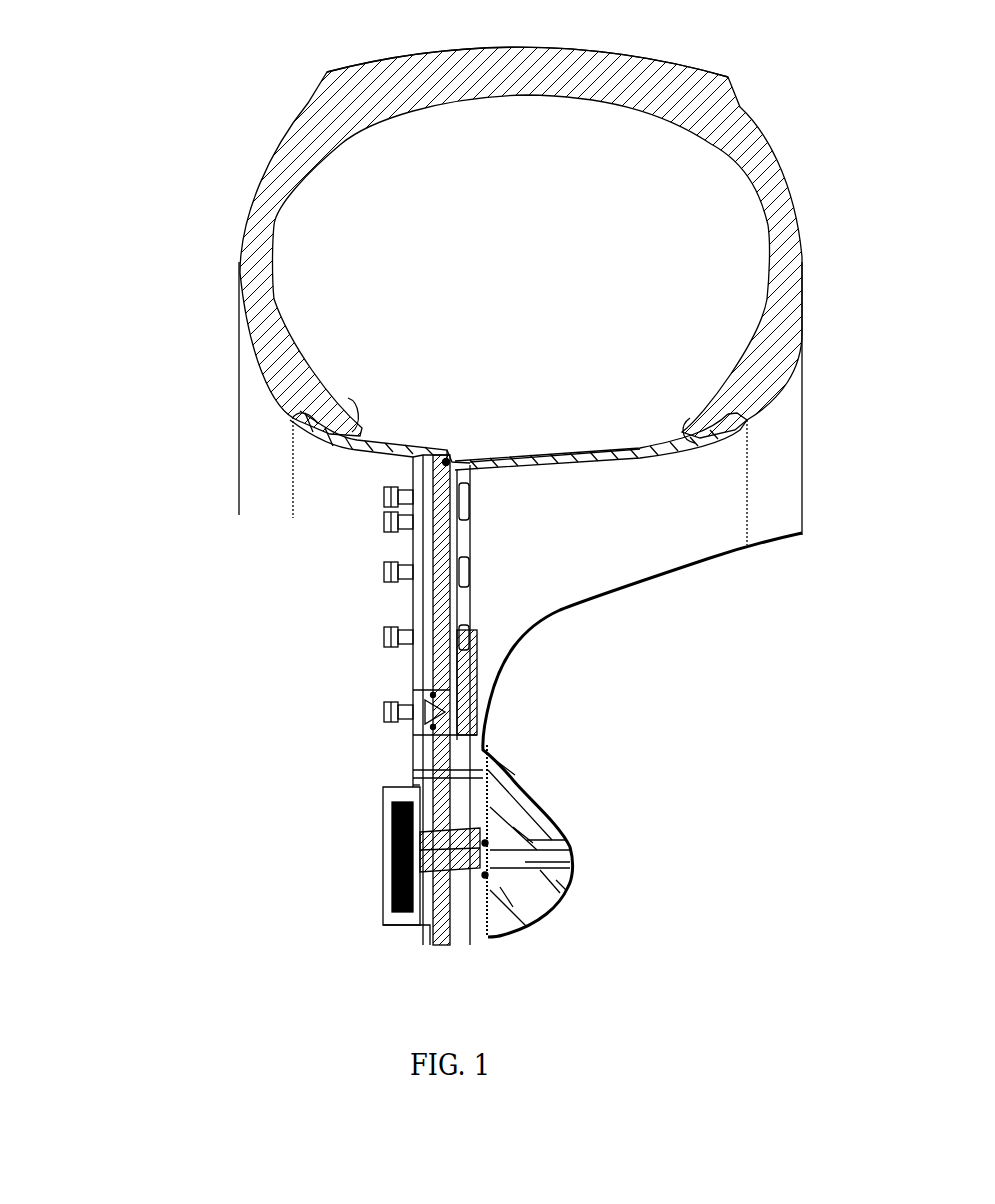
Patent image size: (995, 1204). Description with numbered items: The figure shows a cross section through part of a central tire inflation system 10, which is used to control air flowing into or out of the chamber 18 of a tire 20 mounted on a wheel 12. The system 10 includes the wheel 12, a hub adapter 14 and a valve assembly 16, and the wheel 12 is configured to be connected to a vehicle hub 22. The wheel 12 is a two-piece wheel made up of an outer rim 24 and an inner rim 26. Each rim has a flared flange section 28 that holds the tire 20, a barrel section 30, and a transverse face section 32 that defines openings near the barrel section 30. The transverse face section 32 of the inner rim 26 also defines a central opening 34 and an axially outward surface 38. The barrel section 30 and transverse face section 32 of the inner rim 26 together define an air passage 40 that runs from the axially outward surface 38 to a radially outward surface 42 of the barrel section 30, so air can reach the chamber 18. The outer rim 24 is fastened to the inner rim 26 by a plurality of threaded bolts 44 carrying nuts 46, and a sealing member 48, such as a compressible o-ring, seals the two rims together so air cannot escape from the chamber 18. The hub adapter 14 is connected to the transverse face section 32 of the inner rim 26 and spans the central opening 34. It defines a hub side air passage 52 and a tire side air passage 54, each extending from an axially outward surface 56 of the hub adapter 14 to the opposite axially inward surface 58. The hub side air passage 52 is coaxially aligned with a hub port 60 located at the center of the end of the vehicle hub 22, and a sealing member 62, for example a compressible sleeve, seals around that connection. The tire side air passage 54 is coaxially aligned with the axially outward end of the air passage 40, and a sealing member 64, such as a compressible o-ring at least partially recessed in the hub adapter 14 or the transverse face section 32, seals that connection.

The central tire inflation system 10 is at (93, 97).
The wheel 12 is at (172, 423).
The hub adapter 14 is at (407, 775).
The valve assembly 16 is at (387, 850).
The chamber 18 is at (521, 260).
The tire 20 is at (737, 117).
The vehicle hub 22 is at (560, 840).
The outer rim 24 is at (247, 540).
The inner rim 26 is at (650, 480).
The flared flange section 28 is at (293, 417).
The barrel section 30 is at (338, 410).
The transverse face section 32 is at (393, 543).
The central opening 34 is at (523, 748).
The axially outward surface 38 is at (410, 600).
The air passage 40 is at (467, 667).
The radially outward surface 42 is at (478, 447).
The threaded bolts 44 is at (378, 505).
The nuts 46 is at (387, 488).
The sealing member 48 is at (438, 462).
The hub side air passage 52 is at (548, 898).
The tire side air passage 54 is at (468, 770).
The axially outward surface 56 is at (407, 927).
The axially inward surface 58 is at (540, 925).
The hub port 60 is at (545, 868).
The sealing member 62 is at (522, 838).
The sealing member 64 is at (402, 733).